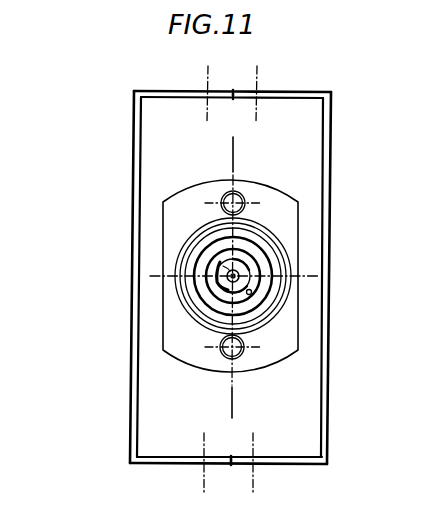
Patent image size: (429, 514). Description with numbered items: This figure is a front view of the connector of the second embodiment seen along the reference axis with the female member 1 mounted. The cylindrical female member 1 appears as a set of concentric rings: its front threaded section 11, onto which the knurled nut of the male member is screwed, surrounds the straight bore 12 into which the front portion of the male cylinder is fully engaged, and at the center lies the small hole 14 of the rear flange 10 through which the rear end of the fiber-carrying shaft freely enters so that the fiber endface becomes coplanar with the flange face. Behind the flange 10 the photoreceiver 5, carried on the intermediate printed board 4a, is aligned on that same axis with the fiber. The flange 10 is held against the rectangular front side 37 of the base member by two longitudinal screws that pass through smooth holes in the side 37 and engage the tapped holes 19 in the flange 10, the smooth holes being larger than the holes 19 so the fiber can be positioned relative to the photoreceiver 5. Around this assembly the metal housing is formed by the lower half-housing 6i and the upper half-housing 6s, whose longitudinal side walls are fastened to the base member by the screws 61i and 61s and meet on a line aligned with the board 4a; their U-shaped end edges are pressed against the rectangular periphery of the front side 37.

The female member 1 is at (260, 229).
The intermediate printed circuit board 4a is at (220, 263).
The photoreceiver 5 is at (245, 275).
The lower half-housing 6i is at (134, 142).
The upper half-housing 6s is at (330, 147).
The rear flange 10 is at (272, 183).
The threaded section 11 is at (283, 246).
The straight bore 12 is at (258, 290).
The small hole 14 is at (227, 292).
The tapped holes 19 is at (228, 352).
The front side 37 is at (158, 112).
The screws of lower half-housing 61i is at (211, 86).
The screws of upper half-housing 61s is at (260, 82).